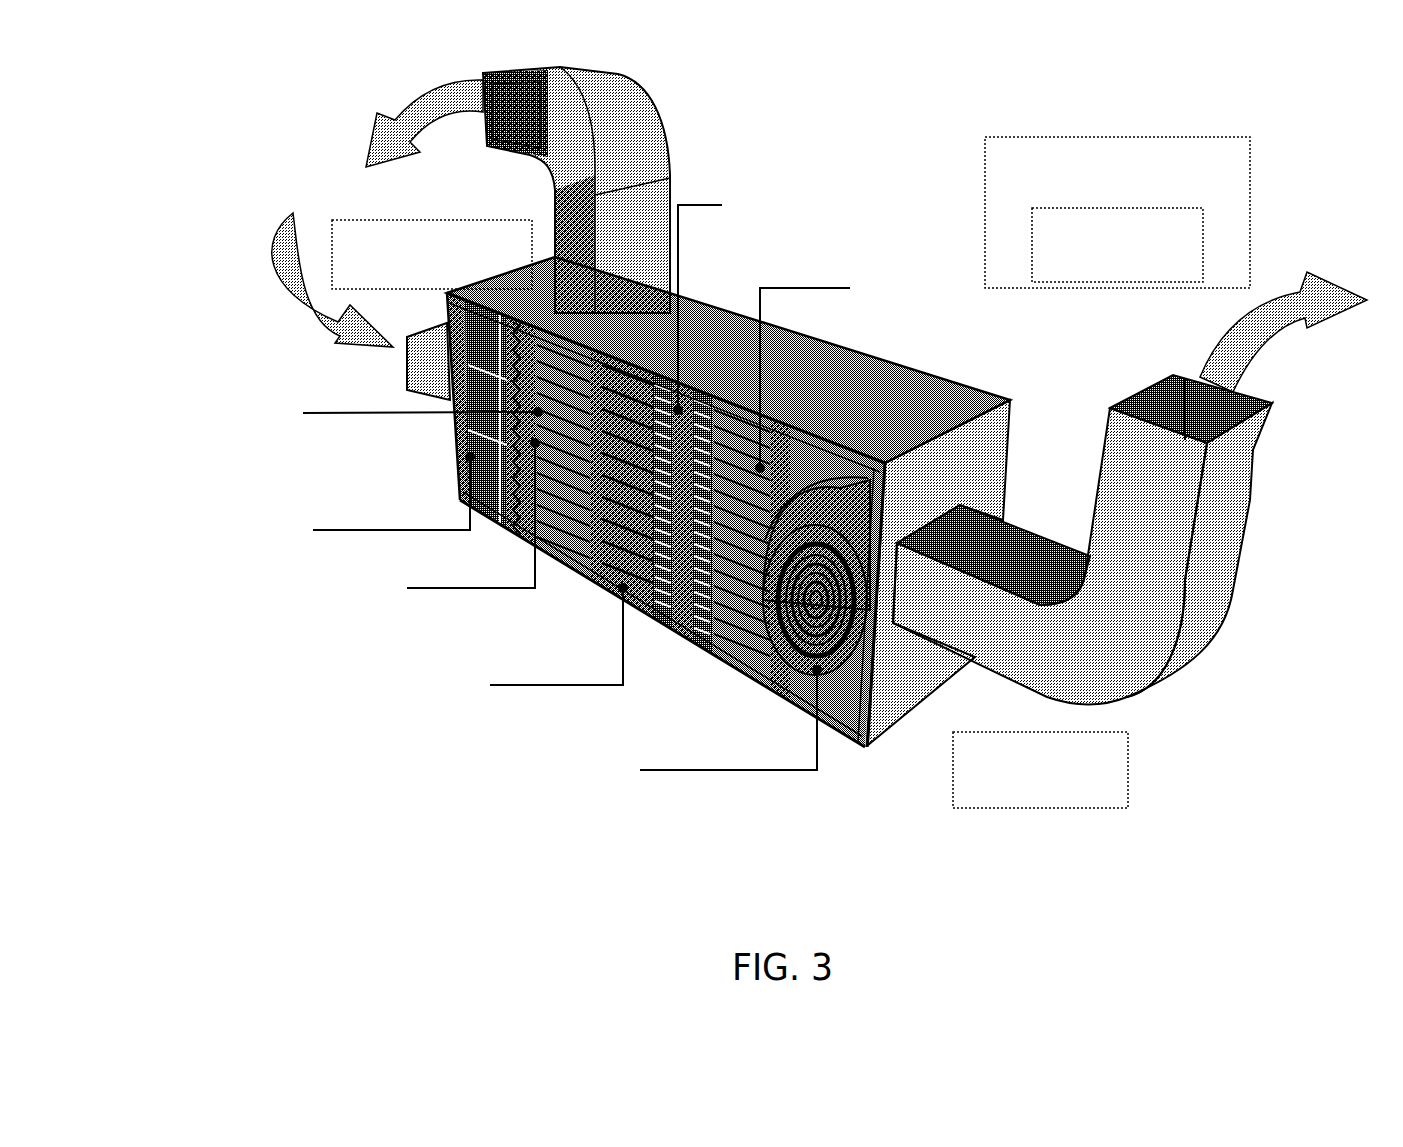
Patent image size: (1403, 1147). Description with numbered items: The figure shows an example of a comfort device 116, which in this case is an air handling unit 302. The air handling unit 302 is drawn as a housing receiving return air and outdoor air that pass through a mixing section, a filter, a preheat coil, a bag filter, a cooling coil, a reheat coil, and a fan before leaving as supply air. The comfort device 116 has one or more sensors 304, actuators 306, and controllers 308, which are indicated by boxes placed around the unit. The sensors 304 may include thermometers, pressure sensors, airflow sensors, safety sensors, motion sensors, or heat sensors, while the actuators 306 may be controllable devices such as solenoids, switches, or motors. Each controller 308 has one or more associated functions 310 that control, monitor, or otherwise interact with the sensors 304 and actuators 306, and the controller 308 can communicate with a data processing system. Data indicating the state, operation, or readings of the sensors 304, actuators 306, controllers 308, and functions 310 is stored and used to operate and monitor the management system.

The comfort device 116 is at (752, 428).
The air handling unit 302 is at (677, 657).
The sensors 304 is at (432, 254).
The actuators 306 is at (1040, 770).
The controllers 308 is at (1117, 212).
The functions 310 is at (1117, 245).